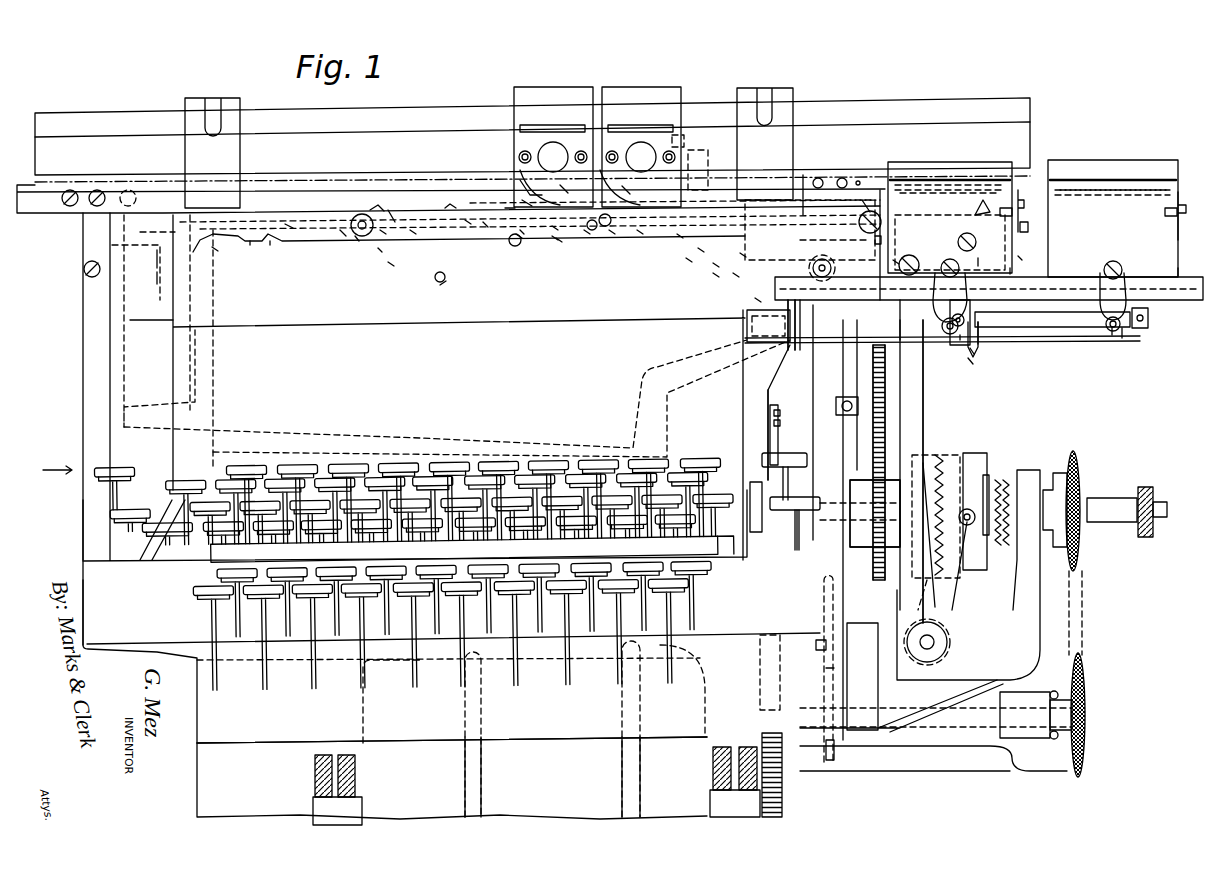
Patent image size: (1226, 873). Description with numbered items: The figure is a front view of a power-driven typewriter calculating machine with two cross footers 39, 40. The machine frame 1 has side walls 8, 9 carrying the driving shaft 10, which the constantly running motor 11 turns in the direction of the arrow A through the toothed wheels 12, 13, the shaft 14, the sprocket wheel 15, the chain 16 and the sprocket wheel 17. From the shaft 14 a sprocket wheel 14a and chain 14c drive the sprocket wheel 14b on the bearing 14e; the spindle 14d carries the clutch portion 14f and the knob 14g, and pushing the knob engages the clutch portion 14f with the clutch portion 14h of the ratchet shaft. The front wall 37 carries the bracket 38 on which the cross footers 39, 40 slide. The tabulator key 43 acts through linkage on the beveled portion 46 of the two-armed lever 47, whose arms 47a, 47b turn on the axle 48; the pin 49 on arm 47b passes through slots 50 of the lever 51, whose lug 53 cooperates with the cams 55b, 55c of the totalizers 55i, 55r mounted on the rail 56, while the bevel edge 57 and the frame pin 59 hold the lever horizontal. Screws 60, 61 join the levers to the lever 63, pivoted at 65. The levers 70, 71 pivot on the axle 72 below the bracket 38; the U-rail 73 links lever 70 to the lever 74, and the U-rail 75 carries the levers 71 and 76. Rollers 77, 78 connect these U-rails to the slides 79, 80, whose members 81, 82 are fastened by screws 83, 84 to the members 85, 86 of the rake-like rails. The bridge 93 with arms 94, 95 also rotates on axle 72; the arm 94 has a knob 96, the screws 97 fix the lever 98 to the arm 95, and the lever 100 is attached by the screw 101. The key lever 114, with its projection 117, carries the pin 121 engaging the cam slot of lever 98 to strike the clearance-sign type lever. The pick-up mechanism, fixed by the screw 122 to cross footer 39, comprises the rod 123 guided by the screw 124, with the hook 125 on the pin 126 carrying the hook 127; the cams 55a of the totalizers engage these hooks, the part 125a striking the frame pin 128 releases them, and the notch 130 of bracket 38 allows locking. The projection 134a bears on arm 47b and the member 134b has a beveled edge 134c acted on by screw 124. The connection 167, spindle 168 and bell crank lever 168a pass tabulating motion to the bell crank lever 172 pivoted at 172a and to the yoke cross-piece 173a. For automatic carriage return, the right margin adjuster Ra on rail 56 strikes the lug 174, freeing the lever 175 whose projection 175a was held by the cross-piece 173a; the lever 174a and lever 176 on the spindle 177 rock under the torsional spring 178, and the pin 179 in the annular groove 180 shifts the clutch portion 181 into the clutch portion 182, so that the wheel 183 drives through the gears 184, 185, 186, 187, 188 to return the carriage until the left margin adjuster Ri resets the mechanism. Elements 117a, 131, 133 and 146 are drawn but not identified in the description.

The machine frame 1 is at (86, 607).
The side wall 8 is at (86, 535).
The side wall 9 is at (840, 476).
The driving shaft 10 is at (816, 648).
The motor 11 is at (360, 720).
The toothed wheel 12 is at (783, 795).
The toothed wheel 13 is at (760, 677).
The shaft 14 is at (798, 710).
The sprocket wheel 14a is at (1086, 728).
The sprocket wheel 14b is at (1078, 458).
The chain 14c is at (1083, 585).
The spindle 14d is at (1110, 500).
The bearing 14e is at (1034, 474).
The clutch portion 14f is at (1005, 482).
The knob 14g is at (1155, 494).
The clutch portion 14h is at (988, 474).
The sprocket wheel 15 is at (834, 755).
The chain 16 is at (826, 671).
The sprocket wheel 17 is at (824, 605).
The front wall 37 is at (446, 323).
The bracket 38 is at (1203, 289).
The cross footer 39 is at (950, 172).
The cross footer 40 is at (1115, 170).
The tabulator key 43 is at (708, 568).
The beveled portion 46 is at (216, 250).
The two-armed lever 47 is at (357, 240).
The lever arm 47a is at (290, 228).
The lever arm 47b is at (392, 212).
The axle 48 is at (345, 233).
The pin 49 is at (468, 224).
The slots 50 is at (485, 227).
The lever 51 is at (520, 238).
The projection 53 is at (508, 208).
The cam 55a is at (532, 190).
The cam 55b is at (562, 188).
The cam 55c is at (694, 172).
The totalizer 55i is at (549, 95).
The totalizer 55r is at (633, 95).
The rail 56 is at (1026, 111).
The bevel edge 57 is at (555, 240).
The pin 59 is at (522, 234).
The screw 60 is at (804, 176).
The screw 61 is at (984, 200).
The lever 63 is at (980, 262).
The pivot connection 65 is at (960, 242).
The lever 70 is at (790, 345).
The lever 71 is at (978, 340).
The axle 72 is at (1149, 319).
The U-rail 73 is at (832, 343).
The lever 74 is at (960, 340).
The U-rail 75 is at (1066, 328).
The lever 76 is at (1125, 331).
The roller 77 is at (946, 340).
The roller 78 is at (1114, 329).
The slide 79 is at (967, 296).
The slide 80 is at (1122, 296).
The upwardly extending member 81 is at (895, 262).
The upwardly extending member 82 is at (1012, 270).
The screw 83 is at (882, 218).
The screw 84 is at (1022, 203).
The member 85 is at (935, 193).
The member 86 is at (1085, 191).
The bridge 93 is at (920, 340).
The arm 94 is at (975, 355).
The arm 95 is at (776, 381).
The knob 96 is at (969, 366).
The screws 97 is at (778, 452).
The lever 98 is at (795, 528).
The lever 100 is at (778, 410).
The screw 101 is at (780, 420).
The key lever 114 is at (755, 492).
The projection 117 is at (157, 259).
The spring end 117a is at (160, 279).
The pin 121 is at (815, 497).
The screw 122 is at (872, 205).
The rod 123 is at (680, 238).
The screw 124 is at (555, 230).
The hook 125 is at (525, 200).
The hook part 125a is at (640, 234).
The pin 126 is at (612, 234).
The hook 127 is at (587, 234).
The pin 128 is at (560, 242).
The notch 130 is at (742, 257).
The segment 131 is at (277, 245).
The segment 133 is at (258, 244).
The projection 134a is at (374, 210).
The bridge member 134b is at (392, 266).
The beveled edge 134c is at (385, 233).
The bracket 146 is at (684, 141).
The connection point 167 is at (446, 287).
The spindle 168 is at (380, 251).
The bell crank lever 168a is at (439, 282).
The bell crank lever 172 is at (688, 261).
The pivot point 172a is at (715, 277).
The cross-piece 173a is at (735, 277).
The lug 174 is at (448, 208).
The lever 174a is at (926, 415).
The lever 175 is at (944, 268).
The projection 175a is at (757, 301).
The lever 176 is at (955, 600).
The spindle 177 is at (948, 641).
The torsional spring 178 is at (955, 618).
The pin 179 is at (975, 528).
The annular groove 180 is at (971, 458).
The clutch portion 181 is at (944, 460).
The clutch portion 182 is at (918, 458).
The wheel 183 is at (882, 562).
The wheel gear 184 is at (874, 432).
The wheel gear 185 is at (835, 272).
The wheel gear 186 is at (880, 247).
The wheel gear 187 is at (715, 266).
The wheel gear 188 is at (700, 251).
The left margin adjuster Ri is at (227, 105).
The right margin adjuster Ra is at (783, 97).
The arrow A is at (57, 461).